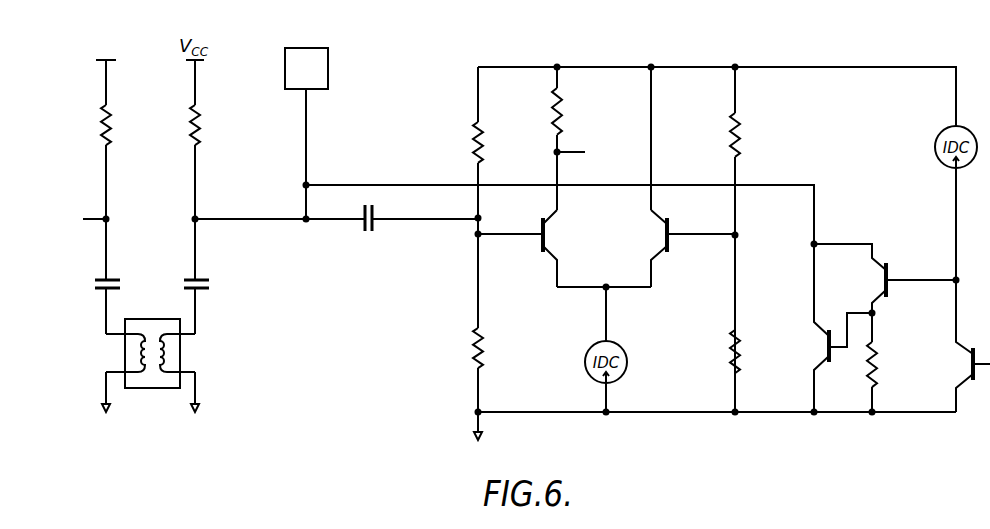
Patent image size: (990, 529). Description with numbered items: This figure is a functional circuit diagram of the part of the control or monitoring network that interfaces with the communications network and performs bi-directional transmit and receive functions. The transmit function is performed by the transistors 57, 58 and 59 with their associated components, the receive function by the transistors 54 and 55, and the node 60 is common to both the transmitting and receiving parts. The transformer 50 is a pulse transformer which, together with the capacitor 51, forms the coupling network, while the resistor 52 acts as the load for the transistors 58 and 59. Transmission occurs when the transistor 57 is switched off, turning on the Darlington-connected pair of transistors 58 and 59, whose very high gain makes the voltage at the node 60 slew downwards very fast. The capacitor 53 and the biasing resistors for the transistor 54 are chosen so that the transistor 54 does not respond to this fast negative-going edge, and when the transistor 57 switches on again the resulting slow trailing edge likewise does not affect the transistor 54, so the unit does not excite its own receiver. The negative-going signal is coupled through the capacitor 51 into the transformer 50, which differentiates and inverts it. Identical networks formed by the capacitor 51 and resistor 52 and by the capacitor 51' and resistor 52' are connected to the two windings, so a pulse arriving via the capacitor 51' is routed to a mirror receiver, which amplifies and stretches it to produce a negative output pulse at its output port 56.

The transformer 50 is at (157, 390).
The capacitor 51 is at (211, 265).
The capacitor 51' is at (122, 265).
The resistor 52 is at (214, 127).
The resistor 52' is at (129, 127).
The capacitor 53 is at (368, 233).
The transistor 54 is at (552, 234).
The transistor 55 is at (657, 234).
The output port 56 is at (593, 146).
The transistor 57 is at (962, 364).
The transistor 58 is at (874, 276).
The transistor 59 is at (822, 346).
The node 60 is at (329, 72).